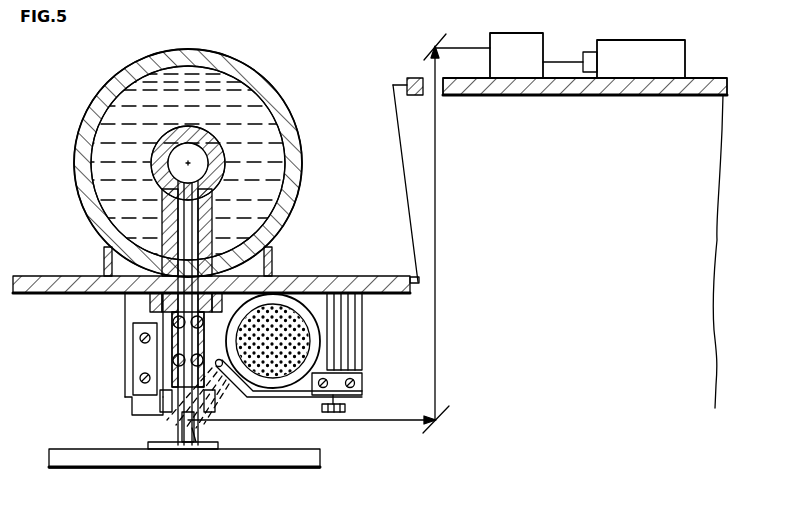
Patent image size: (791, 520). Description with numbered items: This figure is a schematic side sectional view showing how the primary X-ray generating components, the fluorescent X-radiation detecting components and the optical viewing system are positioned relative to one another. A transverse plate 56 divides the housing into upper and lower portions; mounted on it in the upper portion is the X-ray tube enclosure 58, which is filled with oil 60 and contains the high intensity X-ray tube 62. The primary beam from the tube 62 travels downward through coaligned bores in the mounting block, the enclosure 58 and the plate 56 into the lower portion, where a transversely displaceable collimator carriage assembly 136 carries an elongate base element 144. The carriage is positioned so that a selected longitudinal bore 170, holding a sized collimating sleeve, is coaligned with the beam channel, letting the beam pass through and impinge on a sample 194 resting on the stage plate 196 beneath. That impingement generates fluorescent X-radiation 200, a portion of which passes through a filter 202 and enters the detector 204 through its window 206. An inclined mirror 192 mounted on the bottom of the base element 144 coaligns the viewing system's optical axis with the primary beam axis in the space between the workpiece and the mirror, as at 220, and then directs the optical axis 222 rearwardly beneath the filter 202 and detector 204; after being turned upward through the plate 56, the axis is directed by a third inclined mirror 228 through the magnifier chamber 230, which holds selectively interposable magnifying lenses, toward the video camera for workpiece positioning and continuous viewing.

The transverse plate 56 is at (66, 276).
The X-ray tube enclosure 58 is at (283, 102).
The oil 60 is at (268, 131).
The X-ray tube 62 is at (223, 180).
The collimator carriage assembly 136 is at (93, 403).
The base element 144 is at (172, 427).
The longitudinal bore 170 is at (190, 225).
The inclined mirror 192 is at (185, 447).
The sample 194 is at (148, 446).
The stage plate 196 is at (90, 468).
The fluorescent X-radiation 200 is at (236, 398).
The filter 202 is at (238, 392).
The detector 204 is at (296, 292).
The window 206 is at (273, 341).
The coaligned optical axis region 220 is at (197, 430).
The optical axis 222 is at (402, 421).
The third inclined mirror 228 is at (436, 42).
The magnifier chamber 230 is at (529, 33).